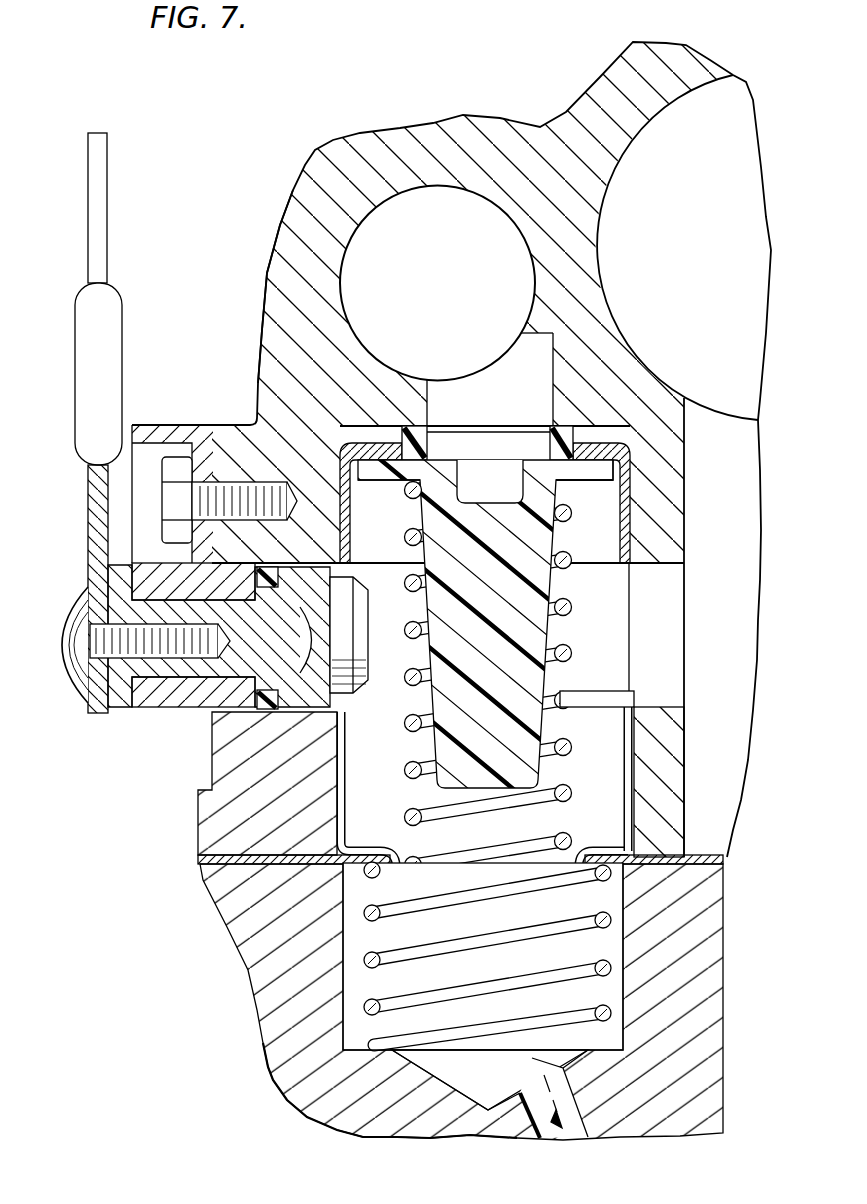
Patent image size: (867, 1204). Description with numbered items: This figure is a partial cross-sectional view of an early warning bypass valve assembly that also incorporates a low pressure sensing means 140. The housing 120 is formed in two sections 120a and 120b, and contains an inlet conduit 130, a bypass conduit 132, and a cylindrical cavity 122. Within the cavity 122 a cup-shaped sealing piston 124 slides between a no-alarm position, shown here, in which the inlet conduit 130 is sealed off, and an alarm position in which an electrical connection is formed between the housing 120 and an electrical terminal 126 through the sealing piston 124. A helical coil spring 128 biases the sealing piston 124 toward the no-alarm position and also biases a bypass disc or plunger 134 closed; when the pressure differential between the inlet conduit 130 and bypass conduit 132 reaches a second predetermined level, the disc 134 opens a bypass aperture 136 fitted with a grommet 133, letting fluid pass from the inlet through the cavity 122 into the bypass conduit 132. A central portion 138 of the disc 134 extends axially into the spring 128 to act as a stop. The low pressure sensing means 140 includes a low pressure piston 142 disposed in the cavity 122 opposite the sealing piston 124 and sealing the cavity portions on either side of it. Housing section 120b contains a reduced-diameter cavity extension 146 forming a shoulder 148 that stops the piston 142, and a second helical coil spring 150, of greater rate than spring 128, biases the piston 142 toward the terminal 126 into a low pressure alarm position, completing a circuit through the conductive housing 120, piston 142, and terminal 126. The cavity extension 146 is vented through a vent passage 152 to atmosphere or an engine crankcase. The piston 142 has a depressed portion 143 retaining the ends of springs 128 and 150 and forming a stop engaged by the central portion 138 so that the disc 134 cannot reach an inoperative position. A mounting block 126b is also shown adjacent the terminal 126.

The housing 120 is at (293, 189).
The housing section 120a is at (293, 238).
The housing section 120b is at (717, 992).
The cylindrical cavity 122 is at (348, 770).
The cup-shaped sealing piston 124 is at (630, 489).
The electrical terminal 126 is at (90, 575).
The mounting block 126b is at (214, 494).
The helical coil spring 128 is at (579, 608).
The inlet conduit 130 is at (357, 348).
The bypass conduit 132 is at (668, 563).
The grommet 133 is at (550, 437).
The bypass disc or plunger 134 is at (573, 463).
The bypass aperture 136 is at (407, 427).
The central portion 138 is at (530, 680).
The low pressure sensing means 140 is at (638, 752).
The low pressure piston 142 is at (634, 781).
The depressed portion 143 is at (493, 903).
The cavity extension 146 is at (341, 1040).
The shoulder 148 is at (350, 860).
The helical coil spring 150 is at (587, 959).
The vent passage 152 is at (578, 1127).